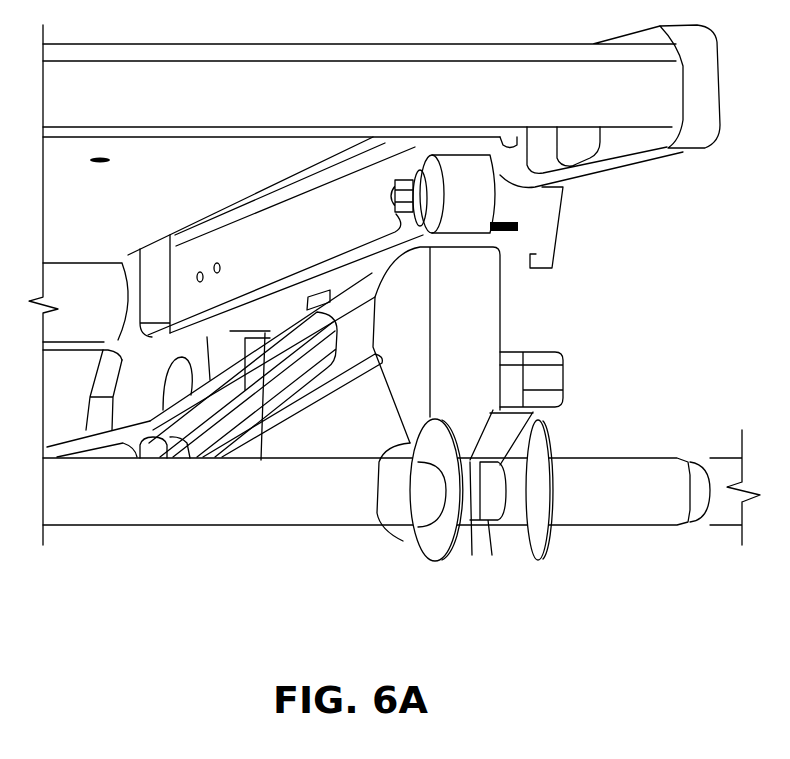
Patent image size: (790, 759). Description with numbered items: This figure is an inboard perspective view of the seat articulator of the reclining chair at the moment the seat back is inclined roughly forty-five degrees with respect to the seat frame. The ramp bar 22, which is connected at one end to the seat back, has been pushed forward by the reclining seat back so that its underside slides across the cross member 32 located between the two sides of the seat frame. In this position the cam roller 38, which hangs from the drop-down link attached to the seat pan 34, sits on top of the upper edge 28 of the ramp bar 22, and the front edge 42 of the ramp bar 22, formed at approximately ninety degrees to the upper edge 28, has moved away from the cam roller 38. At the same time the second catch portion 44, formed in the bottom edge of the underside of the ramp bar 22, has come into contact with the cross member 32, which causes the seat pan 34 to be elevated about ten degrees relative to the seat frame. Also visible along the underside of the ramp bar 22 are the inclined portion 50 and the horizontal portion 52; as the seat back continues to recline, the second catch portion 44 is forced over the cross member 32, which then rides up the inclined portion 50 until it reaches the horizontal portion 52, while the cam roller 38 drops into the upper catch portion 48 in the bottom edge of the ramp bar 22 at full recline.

The seat pan 34 is at (344, 108).
The cam roller 38 is at (477, 197).
The upper edge 28 is at (463, 235).
The front edge 42 is at (512, 287).
The ramp bar 22 is at (195, 455).
The upper catch portion 48 is at (270, 455).
The horizontal portion 52 is at (327, 390).
The cross member 32 is at (104, 504).
The second catch portion 44 is at (490, 520).
The inclined portion 50 is at (383, 452).